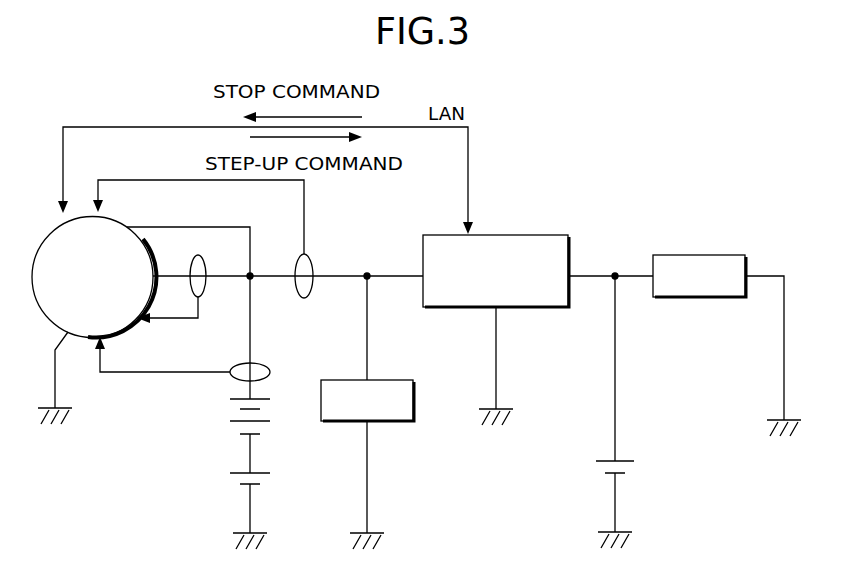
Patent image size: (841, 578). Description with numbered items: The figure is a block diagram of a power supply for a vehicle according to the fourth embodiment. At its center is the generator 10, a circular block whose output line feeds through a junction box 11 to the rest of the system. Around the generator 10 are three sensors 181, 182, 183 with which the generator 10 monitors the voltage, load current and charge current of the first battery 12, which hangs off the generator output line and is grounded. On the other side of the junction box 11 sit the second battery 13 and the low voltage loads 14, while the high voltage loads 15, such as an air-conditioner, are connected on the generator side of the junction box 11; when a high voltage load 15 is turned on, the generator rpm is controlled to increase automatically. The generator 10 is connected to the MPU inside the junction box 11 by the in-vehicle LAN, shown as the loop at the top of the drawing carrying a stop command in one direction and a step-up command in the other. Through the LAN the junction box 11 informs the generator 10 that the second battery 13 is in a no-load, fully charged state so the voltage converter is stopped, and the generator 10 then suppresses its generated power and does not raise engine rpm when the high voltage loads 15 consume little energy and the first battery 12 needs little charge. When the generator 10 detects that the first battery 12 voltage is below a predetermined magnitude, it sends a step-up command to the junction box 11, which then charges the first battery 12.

The generator 10 is at (123, 334).
The junction box 11 is at (527, 235).
The first battery 12 is at (228, 410).
The second battery 13 is at (636, 470).
The low voltage loads 14 is at (700, 254).
The high voltage loads 15 is at (398, 422).
The sensor 181 is at (210, 264).
The sensor 182 is at (313, 262).
The sensor 183 is at (270, 356).